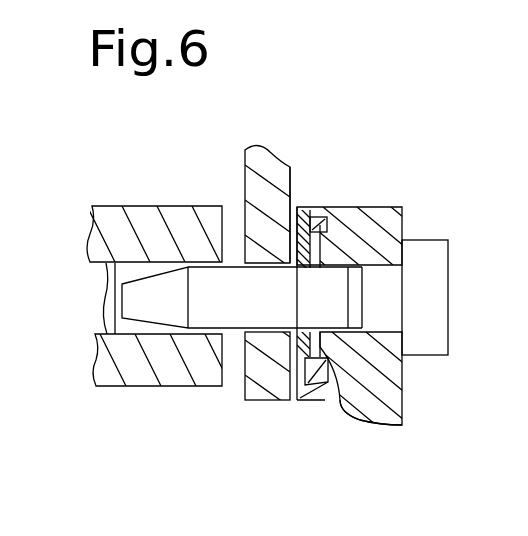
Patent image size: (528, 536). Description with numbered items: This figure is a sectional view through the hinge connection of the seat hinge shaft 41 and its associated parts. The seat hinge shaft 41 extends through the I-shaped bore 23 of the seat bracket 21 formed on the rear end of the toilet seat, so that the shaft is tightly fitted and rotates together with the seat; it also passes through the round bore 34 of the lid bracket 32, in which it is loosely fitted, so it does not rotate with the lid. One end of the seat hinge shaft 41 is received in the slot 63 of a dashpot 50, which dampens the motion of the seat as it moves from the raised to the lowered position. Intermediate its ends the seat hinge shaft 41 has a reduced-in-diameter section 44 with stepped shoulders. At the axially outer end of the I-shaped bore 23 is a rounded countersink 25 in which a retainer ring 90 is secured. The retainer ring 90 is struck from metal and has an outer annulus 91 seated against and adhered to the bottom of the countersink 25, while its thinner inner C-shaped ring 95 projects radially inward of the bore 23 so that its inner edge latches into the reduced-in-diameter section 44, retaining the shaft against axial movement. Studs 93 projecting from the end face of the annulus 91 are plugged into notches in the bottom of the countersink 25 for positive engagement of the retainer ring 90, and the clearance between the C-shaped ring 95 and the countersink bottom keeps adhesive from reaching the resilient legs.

The seat bracket 21 is at (380, 408).
The I-shaped bore 23 is at (333, 235).
The countersink 25 is at (338, 402).
The lid bracket 32 is at (244, 184).
The round bore 34 is at (253, 360).
The seat hinge shaft 41 is at (441, 240).
The reduced-in-diameter section 44 is at (345, 287).
The dashpot 50 is at (115, 387).
The slot 63 is at (130, 272).
The retainer ring 90 is at (293, 403).
The outer annulus 91 is at (304, 215).
The stud 93 is at (322, 398).
The C-shaped ring 95 is at (288, 190).